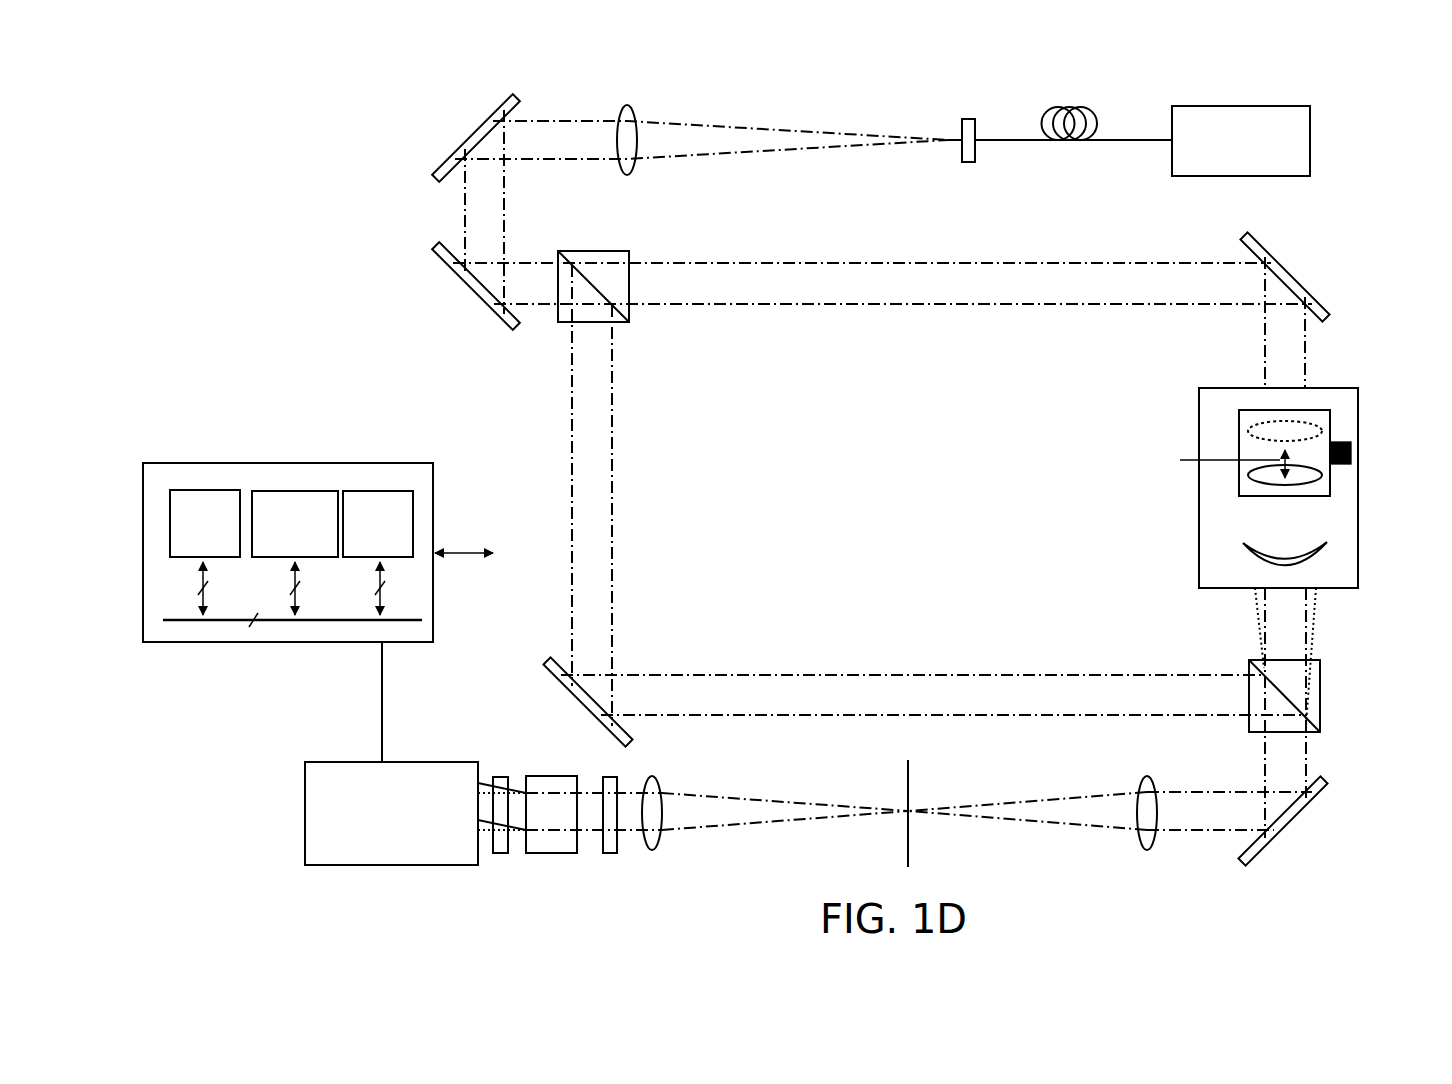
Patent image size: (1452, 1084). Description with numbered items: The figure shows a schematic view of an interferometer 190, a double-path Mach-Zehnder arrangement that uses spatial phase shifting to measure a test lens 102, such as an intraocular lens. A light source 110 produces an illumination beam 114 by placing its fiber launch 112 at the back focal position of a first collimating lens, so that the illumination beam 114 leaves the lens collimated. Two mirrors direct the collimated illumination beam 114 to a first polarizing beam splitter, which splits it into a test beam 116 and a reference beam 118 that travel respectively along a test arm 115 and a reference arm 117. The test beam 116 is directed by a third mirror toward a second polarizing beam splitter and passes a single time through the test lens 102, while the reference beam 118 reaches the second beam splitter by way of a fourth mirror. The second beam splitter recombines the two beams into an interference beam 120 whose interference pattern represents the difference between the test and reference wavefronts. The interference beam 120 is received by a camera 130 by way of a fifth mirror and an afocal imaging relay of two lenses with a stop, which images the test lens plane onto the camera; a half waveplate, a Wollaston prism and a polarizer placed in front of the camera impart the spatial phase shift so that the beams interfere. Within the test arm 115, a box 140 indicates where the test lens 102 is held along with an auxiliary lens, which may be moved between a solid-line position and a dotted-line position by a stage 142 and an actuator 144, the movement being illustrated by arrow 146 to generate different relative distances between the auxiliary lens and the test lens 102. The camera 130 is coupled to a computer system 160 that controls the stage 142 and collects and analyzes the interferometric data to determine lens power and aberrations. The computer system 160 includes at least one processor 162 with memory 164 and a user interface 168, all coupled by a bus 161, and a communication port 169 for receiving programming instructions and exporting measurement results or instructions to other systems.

The interferometer 190 is at (767, 477).
The light source 110 is at (1310, 140).
The fiber launch 112 is at (966, 119).
The illumination beam 114 is at (790, 130).
The test beam 116 is at (830, 262).
The test arm 115 is at (1341, 310).
The reference beam 118 is at (612, 478).
The reference arm 117 is at (531, 701).
The interference beam 120 is at (1175, 792).
The box 140 is at (1287, 475).
The stage 142 is at (1330, 418).
The actuator 144 is at (1351, 453).
The arrow 146 is at (1180, 460).
The test lens 102 is at (1327, 542).
The camera 130 is at (305, 820).
The computer system 160 is at (300, 520).
The processor 162 is at (170, 517).
The memory 164 is at (275, 490).
The user interface 168 is at (375, 491).
The communication port 169 is at (455, 545).
The bus 161 is at (175, 620).